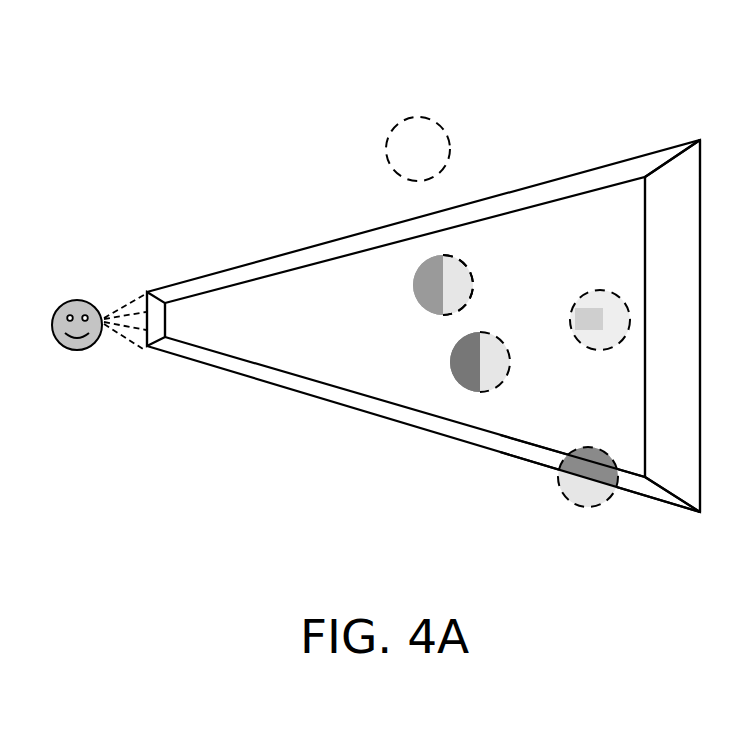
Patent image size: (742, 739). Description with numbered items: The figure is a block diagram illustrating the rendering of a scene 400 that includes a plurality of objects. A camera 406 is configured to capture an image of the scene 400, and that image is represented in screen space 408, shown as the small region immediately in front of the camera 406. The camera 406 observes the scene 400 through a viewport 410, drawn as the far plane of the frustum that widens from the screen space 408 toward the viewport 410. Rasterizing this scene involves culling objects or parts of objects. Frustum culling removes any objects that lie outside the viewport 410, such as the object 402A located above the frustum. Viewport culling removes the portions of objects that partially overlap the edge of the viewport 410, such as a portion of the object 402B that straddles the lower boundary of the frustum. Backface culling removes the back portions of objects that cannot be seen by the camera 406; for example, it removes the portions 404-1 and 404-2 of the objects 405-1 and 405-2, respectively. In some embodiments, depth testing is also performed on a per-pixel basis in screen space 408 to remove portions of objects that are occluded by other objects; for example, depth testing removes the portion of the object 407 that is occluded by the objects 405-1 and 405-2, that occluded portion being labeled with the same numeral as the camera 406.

The scene 400 is at (292, 160).
The object 402A is at (437, 118).
The object 402B is at (570, 452).
The portion 404-1 is at (484, 262).
The portion 404-2 is at (504, 316).
The object 405-1 is at (415, 287).
The object 405-2 is at (458, 340).
The camera 406 is at (96, 304).
The object 407 is at (572, 332).
The screen space 408 is at (170, 318).
The viewport 410 is at (663, 150).